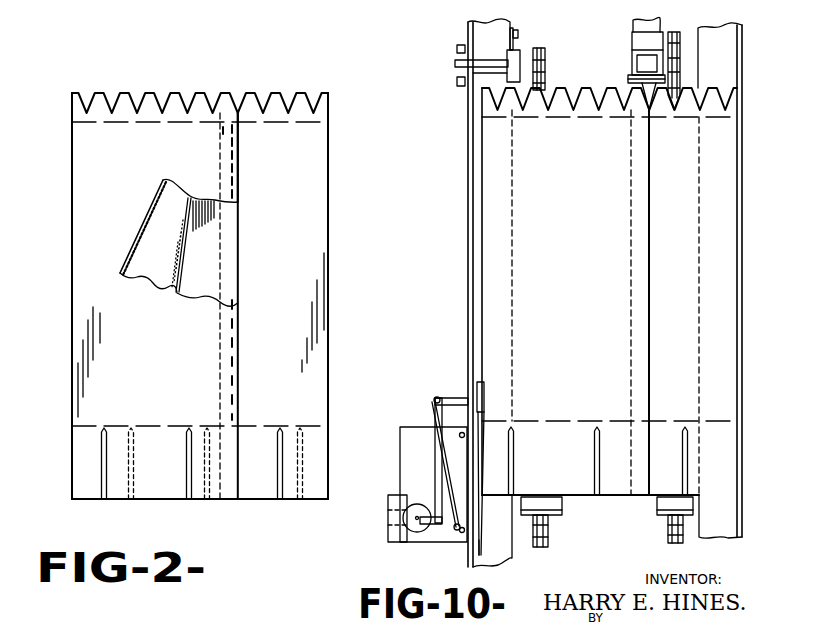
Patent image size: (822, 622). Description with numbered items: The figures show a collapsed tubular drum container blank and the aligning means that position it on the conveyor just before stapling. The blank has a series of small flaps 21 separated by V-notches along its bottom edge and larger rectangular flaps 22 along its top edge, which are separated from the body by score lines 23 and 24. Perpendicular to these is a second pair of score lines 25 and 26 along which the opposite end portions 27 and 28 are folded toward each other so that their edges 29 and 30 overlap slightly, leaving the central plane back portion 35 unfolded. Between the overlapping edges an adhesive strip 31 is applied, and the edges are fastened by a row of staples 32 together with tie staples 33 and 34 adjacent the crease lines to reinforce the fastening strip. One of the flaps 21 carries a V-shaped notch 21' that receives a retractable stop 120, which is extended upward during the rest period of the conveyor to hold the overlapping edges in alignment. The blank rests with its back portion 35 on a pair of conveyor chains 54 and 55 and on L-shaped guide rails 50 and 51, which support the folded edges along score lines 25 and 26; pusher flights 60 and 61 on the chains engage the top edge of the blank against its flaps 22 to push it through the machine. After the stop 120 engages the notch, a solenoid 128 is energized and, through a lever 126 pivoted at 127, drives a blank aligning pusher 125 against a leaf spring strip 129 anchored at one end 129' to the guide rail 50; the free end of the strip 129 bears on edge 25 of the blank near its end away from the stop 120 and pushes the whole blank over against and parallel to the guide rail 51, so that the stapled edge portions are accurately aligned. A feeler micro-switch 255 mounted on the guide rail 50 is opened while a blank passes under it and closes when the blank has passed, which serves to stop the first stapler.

In FIG. 2, the small flaps 21 is at (205, 84).
In FIG. 10, the small flaps 21 is at (609, 90).
In FIG. 2, the V-shaped notches 21' is at (265, 124).
In FIG. 10, the V-shaped notches 21' is at (602, 128).
In FIG. 2, the larger rectangular flaps 22 is at (165, 496).
In FIG. 10, the larger rectangular flaps 22 is at (585, 496).
In FIG. 2, the score line 23 is at (268, 124).
In FIG. 2, the score line 24 is at (140, 403).
In FIG. 10, the score line 24 is at (598, 302).
In FIG. 2, the score line 25 is at (72, 249).
In FIG. 10, the score line 25 is at (482, 268).
In FIG. 2, the score line 26 is at (330, 228).
In FIG. 10, the score line 26 is at (737, 222).
In FIG. 2, the end portion 27 is at (158, 342).
In FIG. 10, the end portion 27 is at (575, 244).
In FIG. 2, the end portion 28 is at (290, 274).
In FIG. 10, the end portion 28 is at (688, 216).
In FIG. 2, the edge 29 is at (238, 170).
In FIG. 10, the edge 29 is at (648, 228).
In FIG. 2, the edge 30 is at (215, 280).
In FIG. 10, the edge 30 is at (631, 272).
In FIG. 2, the adhesive strip 31 is at (170, 184).
In FIG. 2, the row of staples 32 is at (232, 309).
In FIG. 2, the tie staple 33 is at (223, 130).
In FIG. 2, the tie staple 34 is at (222, 418).
In FIG. 2, the central back portion 35 is at (214, 276).
In FIG. 10, the guide rail 50 is at (473, 556).
In FIG. 10, the guide rail 51 is at (712, 538).
In FIG. 10, the conveyor chain 54 is at (674, 32).
In FIG. 10, the conveyor chain 55 is at (535, 62).
In FIG. 10, the pusher flight 60 is at (660, 516).
In FIG. 10, the pusher flight 61 is at (553, 515).
In FIG. 10, the retractable stop 120 is at (641, 83).
In FIG. 10, the blank aligning pusher 125 is at (457, 400).
In FIG. 10, the lever 126 is at (434, 401).
In FIG. 10, the pivot 127 is at (440, 452).
In FIG. 10, the solenoid 128 is at (395, 505).
In FIG. 10, the leaf spring 129 is at (522, 474).
In FIG. 10, the anchored end 129' is at (508, 538).
In FIG. 10, the feeler micro-switch 255 is at (510, 70).